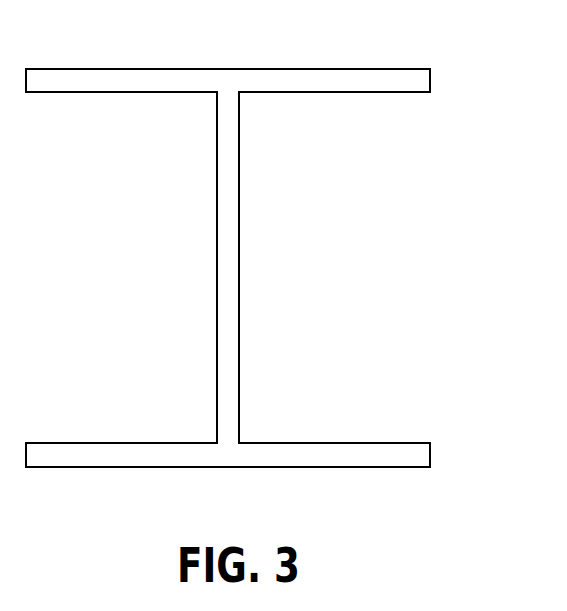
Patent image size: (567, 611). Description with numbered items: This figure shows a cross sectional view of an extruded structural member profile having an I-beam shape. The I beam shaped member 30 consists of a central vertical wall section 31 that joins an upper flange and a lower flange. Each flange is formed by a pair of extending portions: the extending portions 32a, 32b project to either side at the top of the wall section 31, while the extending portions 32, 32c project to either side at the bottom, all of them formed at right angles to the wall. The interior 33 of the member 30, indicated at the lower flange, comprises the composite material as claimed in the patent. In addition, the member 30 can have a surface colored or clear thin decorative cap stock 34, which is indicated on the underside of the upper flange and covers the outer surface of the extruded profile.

The I beam shaped member 30 is at (465, 162).
The wall section 31 is at (240, 250).
The extending portion 32 is at (362, 443).
The extending portion 32a is at (333, 69).
The extending portion 32b is at (138, 69).
The extending portion 32c is at (75, 443).
The interior 33 is at (327, 455).
The decorative cap stock 34 is at (102, 92).